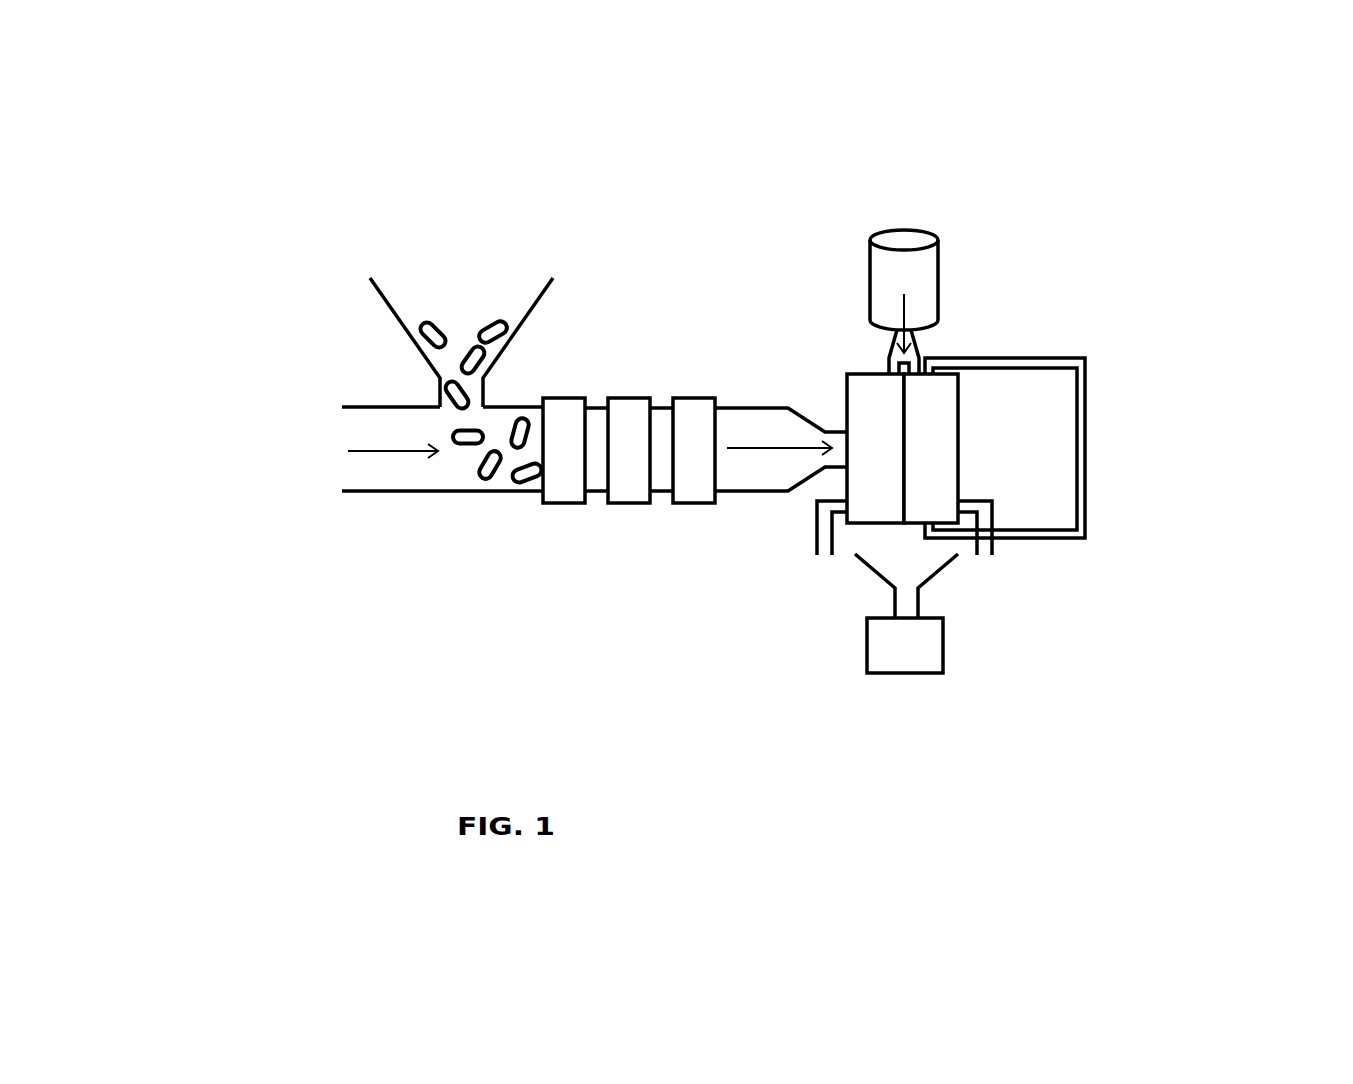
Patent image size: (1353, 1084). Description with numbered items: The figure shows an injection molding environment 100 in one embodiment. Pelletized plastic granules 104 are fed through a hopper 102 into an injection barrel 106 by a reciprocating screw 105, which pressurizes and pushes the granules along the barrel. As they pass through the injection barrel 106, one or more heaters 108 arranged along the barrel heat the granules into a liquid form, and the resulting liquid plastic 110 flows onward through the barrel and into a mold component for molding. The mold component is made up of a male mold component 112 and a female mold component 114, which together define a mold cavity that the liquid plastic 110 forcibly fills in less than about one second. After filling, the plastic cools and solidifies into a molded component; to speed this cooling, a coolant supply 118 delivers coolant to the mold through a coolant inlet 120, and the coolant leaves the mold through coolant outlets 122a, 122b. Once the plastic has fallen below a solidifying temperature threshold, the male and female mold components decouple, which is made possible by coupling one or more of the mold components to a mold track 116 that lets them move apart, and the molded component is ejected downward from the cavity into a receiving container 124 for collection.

The injection molding system 100 is at (274, 181).
The hopper 102 is at (493, 283).
The plastic granules 104 is at (445, 388).
The reciprocating screw 105 is at (295, 445).
The injection barrel 106 is at (457, 492).
The heaters 108 is at (670, 394).
The liquid plastic 110 is at (768, 452).
The male mold component 112 is at (845, 407).
The female mold component 114 is at (963, 388).
The mold track 116 is at (1087, 443).
The coolant supply 118 is at (973, 208).
The coolant inlet 120 is at (888, 358).
The coolant outlet 122a is at (817, 563).
The coolant outlet 122b is at (985, 560).
The receiving container 124 is at (935, 675).